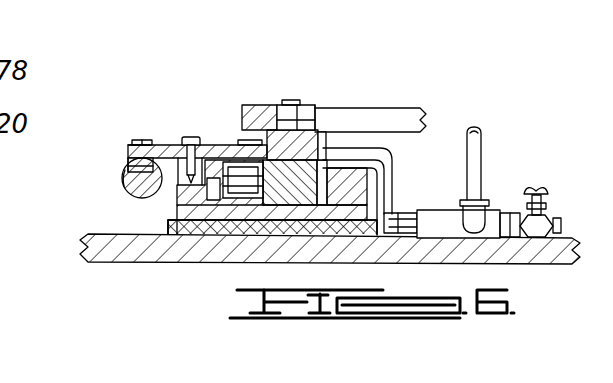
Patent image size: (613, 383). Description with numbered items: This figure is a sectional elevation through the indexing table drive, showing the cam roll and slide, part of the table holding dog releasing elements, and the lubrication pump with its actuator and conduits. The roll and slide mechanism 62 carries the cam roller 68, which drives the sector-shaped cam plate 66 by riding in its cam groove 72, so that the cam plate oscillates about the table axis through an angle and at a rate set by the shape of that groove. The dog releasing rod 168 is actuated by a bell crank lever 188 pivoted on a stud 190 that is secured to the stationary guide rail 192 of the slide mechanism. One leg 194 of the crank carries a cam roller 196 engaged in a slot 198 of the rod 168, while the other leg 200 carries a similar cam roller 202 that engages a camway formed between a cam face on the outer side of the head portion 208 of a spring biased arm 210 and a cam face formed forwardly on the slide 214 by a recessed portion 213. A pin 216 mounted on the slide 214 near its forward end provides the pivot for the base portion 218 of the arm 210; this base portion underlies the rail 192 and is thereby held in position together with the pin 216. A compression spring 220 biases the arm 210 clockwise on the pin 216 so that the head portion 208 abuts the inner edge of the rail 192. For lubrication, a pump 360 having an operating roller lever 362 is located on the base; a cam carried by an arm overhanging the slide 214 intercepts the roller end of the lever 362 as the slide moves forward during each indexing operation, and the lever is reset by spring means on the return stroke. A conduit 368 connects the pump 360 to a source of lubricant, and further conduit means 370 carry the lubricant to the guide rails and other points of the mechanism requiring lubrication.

The roll and slide mechanism 62 is at (332, 138).
The cam plate 66 is at (254, 113).
The cam roller 68 is at (327, 113).
The cam groove 72 is at (382, 110).
The rod 168 is at (124, 188).
The bell crank lever 188 is at (167, 140).
The stud 190 is at (192, 136).
The stationary guide rail 192 is at (135, 195).
The leg of the crank 194 is at (130, 148).
The cam roller 196 is at (128, 163).
The slot 198 is at (128, 170).
The leg of the crank 200 is at (202, 162).
The cam roller 202 is at (308, 120).
The head portion 208 is at (233, 160).
The spring biased arm 210 is at (240, 185).
The recessed portion 213 is at (247, 186).
The slide 214 is at (367, 202).
The pin 216 is at (172, 235).
The base portion 218 is at (132, 238).
The compression spring 220 is at (256, 214).
The pump 360 is at (496, 203).
The operating roller lever 362 is at (400, 212).
The conduit 368 is at (481, 145).
The conduit means 370 is at (547, 208).